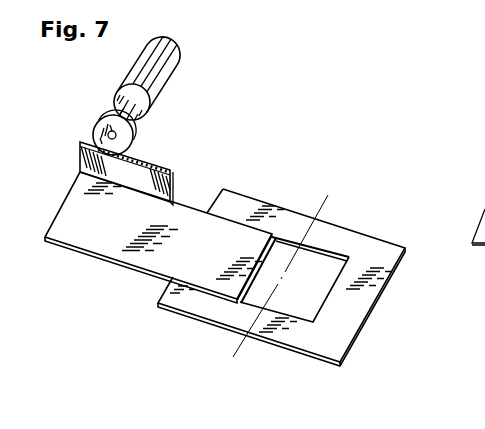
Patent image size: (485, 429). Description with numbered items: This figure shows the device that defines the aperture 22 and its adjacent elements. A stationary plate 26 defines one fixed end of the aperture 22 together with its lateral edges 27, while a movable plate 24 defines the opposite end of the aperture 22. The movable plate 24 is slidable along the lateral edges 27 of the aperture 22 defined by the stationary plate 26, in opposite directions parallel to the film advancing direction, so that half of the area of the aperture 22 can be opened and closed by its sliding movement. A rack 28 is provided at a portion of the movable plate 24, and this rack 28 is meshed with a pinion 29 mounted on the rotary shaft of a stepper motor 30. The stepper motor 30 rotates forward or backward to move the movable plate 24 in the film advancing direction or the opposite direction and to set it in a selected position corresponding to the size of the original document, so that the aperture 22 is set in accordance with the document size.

The aperture 22 is at (294, 289).
The movable plate 24 is at (107, 243).
The stationary plate 26 is at (347, 331).
The lateral edges 27 is at (321, 256).
The rack 28 is at (163, 185).
The pinion 29 is at (134, 135).
The stepper motor 30 is at (157, 82).